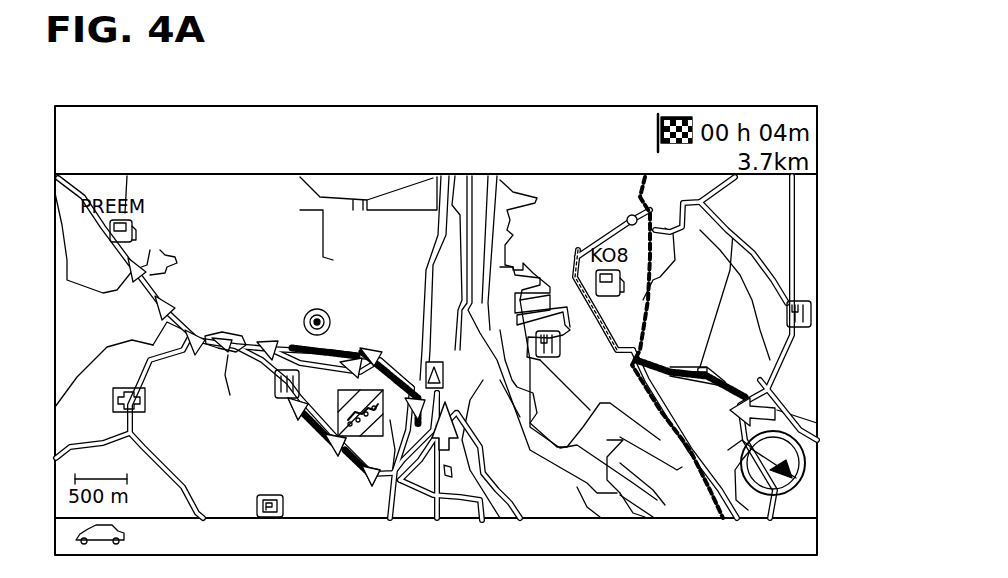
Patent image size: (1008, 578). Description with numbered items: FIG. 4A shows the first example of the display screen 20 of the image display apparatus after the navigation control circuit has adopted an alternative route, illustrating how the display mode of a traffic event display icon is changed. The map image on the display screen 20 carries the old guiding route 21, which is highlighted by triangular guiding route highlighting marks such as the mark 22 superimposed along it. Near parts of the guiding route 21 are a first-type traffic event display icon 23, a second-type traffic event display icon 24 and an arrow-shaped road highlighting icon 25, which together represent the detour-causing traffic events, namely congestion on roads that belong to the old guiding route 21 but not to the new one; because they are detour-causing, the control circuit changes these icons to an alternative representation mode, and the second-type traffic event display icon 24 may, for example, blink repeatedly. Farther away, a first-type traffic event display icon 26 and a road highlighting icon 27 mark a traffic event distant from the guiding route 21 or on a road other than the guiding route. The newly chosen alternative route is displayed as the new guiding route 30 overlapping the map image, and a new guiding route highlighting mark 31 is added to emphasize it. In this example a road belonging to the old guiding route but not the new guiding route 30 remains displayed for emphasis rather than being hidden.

The display screen 20 is at (822, 190).
The guiding route 21 is at (312, 340).
The guiding route highlighting mark 22 is at (228, 352).
The type-1 traffic event display icon 23 is at (438, 452).
The type-2 traffic event display icon 24 is at (365, 470).
The road highlighting icon 25 is at (389, 384).
The type-1 traffic event display icon 26 is at (732, 410).
The road highlighting icon 27 is at (724, 388).
The new guiding route 30 is at (308, 410).
The new guiding route highlighting mark 31 is at (335, 446).